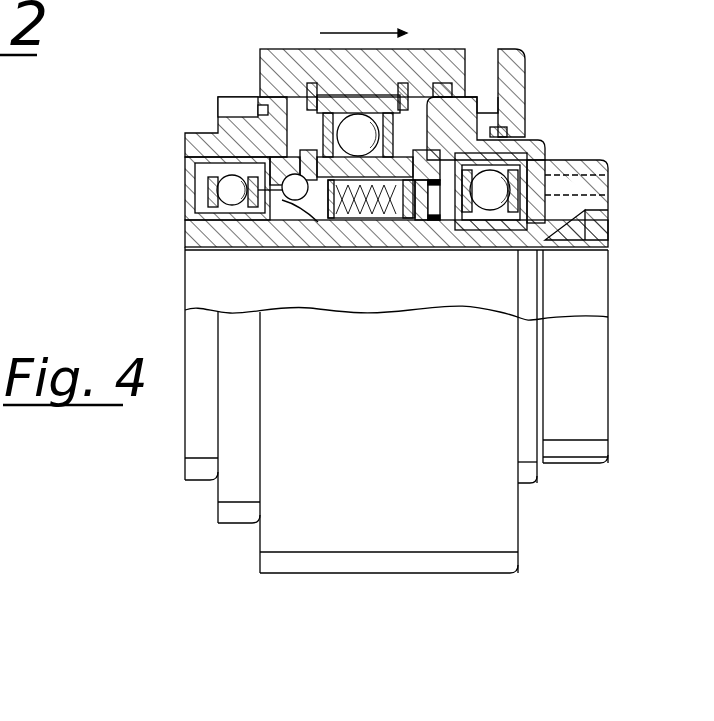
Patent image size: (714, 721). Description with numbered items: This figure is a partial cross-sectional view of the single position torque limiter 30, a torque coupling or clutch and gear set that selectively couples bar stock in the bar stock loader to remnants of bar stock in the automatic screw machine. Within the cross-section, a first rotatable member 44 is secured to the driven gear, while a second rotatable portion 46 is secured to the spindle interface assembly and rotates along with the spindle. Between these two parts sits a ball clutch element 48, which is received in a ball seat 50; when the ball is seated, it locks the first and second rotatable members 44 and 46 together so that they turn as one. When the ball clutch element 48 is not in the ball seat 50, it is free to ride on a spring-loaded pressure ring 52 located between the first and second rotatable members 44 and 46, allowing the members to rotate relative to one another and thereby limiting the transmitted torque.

The single position torque limiter 30 is at (208, 283).
The first rotatable member 44 is at (200, 237).
The second rotatable portion 46 is at (210, 132).
The ball clutch element 48 is at (215, 133).
The ball seat 50 is at (295, 200).
The spring-loaded pressure ring 52 is at (317, 203).